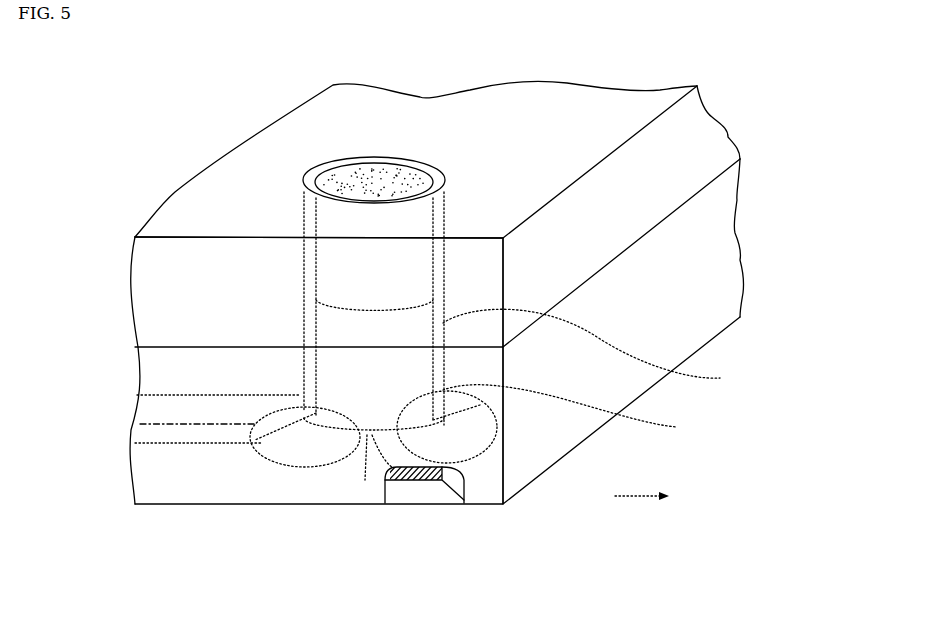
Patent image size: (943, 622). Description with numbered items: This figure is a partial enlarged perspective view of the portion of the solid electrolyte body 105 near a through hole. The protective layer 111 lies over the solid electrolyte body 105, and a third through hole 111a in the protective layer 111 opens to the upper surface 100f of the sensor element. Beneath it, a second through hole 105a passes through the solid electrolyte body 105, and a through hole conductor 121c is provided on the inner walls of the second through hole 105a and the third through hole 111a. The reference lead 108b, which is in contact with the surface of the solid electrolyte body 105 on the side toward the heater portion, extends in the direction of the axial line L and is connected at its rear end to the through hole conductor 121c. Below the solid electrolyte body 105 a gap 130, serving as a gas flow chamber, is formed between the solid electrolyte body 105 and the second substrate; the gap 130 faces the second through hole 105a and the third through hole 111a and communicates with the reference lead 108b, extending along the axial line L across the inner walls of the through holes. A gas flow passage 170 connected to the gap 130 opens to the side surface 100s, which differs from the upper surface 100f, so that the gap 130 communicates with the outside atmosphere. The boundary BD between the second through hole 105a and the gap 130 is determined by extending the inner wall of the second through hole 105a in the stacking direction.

The upper surface 100f is at (597, 110).
The side surface 100s is at (198, 360).
The protective layer 111 is at (727, 135).
The third through hole 111a is at (443, 210).
The solid electrolyte body 105 is at (727, 282).
The second through hole 105a is at (614, 349).
The through hole conductor 121c is at (362, 170).
The reference lead 108b is at (157, 413).
The gap 130 is at (308, 452).
The gas flow passage 170 is at (420, 494).
The boundary BD is at (580, 412).
The axial line L is at (650, 498).